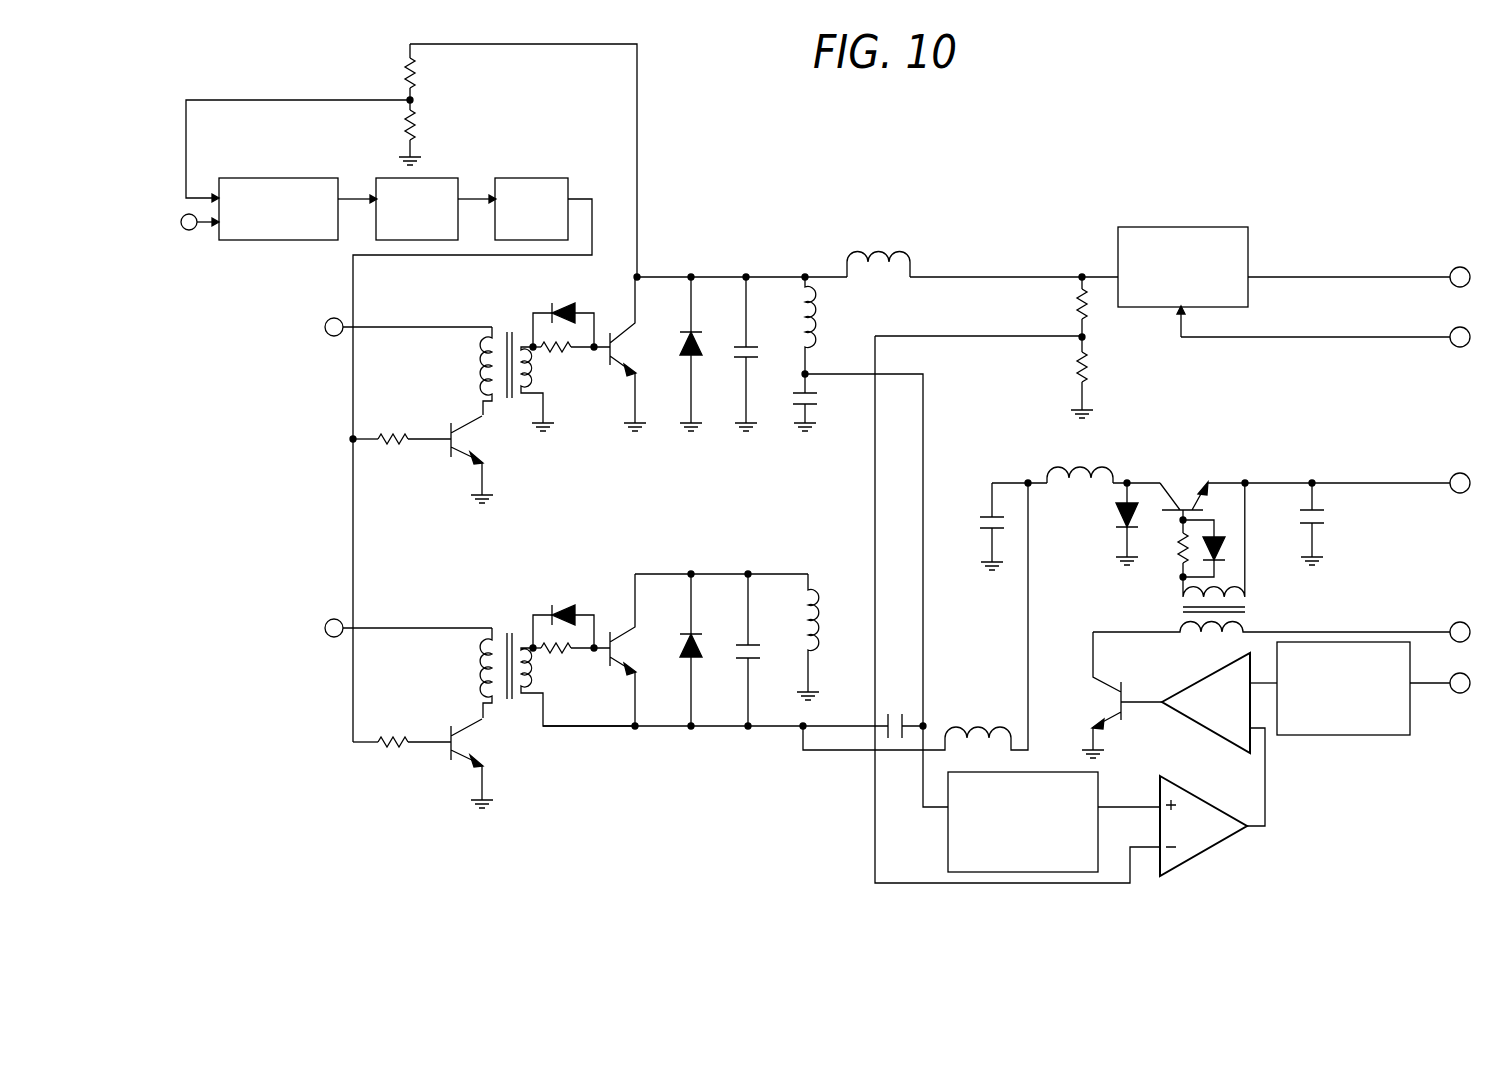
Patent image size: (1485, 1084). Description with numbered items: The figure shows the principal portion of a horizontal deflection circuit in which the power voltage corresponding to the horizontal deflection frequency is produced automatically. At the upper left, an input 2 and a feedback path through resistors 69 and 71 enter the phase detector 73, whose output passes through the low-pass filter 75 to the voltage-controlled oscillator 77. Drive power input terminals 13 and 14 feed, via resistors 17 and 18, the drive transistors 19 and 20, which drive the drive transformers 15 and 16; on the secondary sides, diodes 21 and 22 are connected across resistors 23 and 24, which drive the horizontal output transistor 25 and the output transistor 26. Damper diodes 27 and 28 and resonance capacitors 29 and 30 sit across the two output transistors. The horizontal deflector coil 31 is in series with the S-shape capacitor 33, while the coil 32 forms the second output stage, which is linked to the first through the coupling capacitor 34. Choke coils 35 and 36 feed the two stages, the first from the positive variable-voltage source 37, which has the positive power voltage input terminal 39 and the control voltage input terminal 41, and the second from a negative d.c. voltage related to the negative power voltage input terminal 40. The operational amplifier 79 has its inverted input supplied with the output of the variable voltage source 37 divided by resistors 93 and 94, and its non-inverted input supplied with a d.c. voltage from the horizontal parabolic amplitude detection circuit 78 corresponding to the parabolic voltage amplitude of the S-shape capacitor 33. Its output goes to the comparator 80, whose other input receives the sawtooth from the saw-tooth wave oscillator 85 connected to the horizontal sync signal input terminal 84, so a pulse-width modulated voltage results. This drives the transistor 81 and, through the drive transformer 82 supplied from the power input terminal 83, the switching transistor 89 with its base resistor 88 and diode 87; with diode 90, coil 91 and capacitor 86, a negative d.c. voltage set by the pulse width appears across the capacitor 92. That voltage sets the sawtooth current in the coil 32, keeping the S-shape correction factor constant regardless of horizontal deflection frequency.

The input terminal 2 is at (192, 232).
The drive power input terminal 13 is at (329, 320).
The drive power input terminal 14 is at (326, 621).
The drive transformer 15 is at (503, 322).
The drive transformer 16 is at (500, 620).
The resistor 17 is at (397, 425).
The resistor 18 is at (394, 728).
The drive transistor 19 is at (458, 417).
The drive transistor 20 is at (458, 718).
The diode 21 is at (546, 308).
The diode 22 is at (546, 605).
The resistor 23 is at (565, 358).
The resistor 24 is at (560, 662).
The horizontal output transistor 25 is at (639, 348).
The output transistor 26 is at (639, 659).
The damper diode 27 is at (705, 333).
The damper diode 28 is at (700, 626).
The resonance capacitor 29 is at (752, 343).
The resonance capacitor 30 is at (756, 640).
The horizontal deflector coil 31 is at (832, 340).
The coil 32 is at (835, 640).
The S-shape capacitor 33 is at (819, 398).
The coupling capacitor 34 is at (898, 708).
The choke coil 35 is at (885, 258).
The choke coil 36 is at (970, 735).
The positive variable-voltage source 37 is at (1216, 226).
The positive power voltage input terminal 39 is at (1450, 267).
The negative power voltage input terminal 40 is at (1452, 474).
The control voltage input terminal 41 is at (1450, 330).
The resistor 69 is at (405, 82).
The resistor 71 is at (415, 130).
The phase detector 73 is at (308, 178).
The low-pass filter 75 is at (438, 178).
The voltage-controlled oscillator 77 is at (538, 178).
The horizontal parabolic amplitude detection circuit 78 is at (1037, 772).
The operational amplifier 79 is at (1196, 795).
The comparator 80 is at (1187, 680).
The transistor 81 is at (1103, 682).
The drive transformer 82 is at (1257, 607).
The power input terminal 83 is at (1450, 624).
The horizontal sync signal input terminal 84 is at (1450, 676).
The saw-tooth wave oscillator 85 is at (1375, 736).
The capacitor 86 is at (1334, 513).
The diode 87 is at (1228, 546).
The resistor 88 is at (1176, 546).
The switching transistor 89 is at (1172, 488).
The diode 90 is at (1112, 510).
The coil 91 is at (1085, 465).
The capacitor 92 is at (980, 505).
The resistor 93 is at (1072, 308).
The resistor 94 is at (1073, 373).